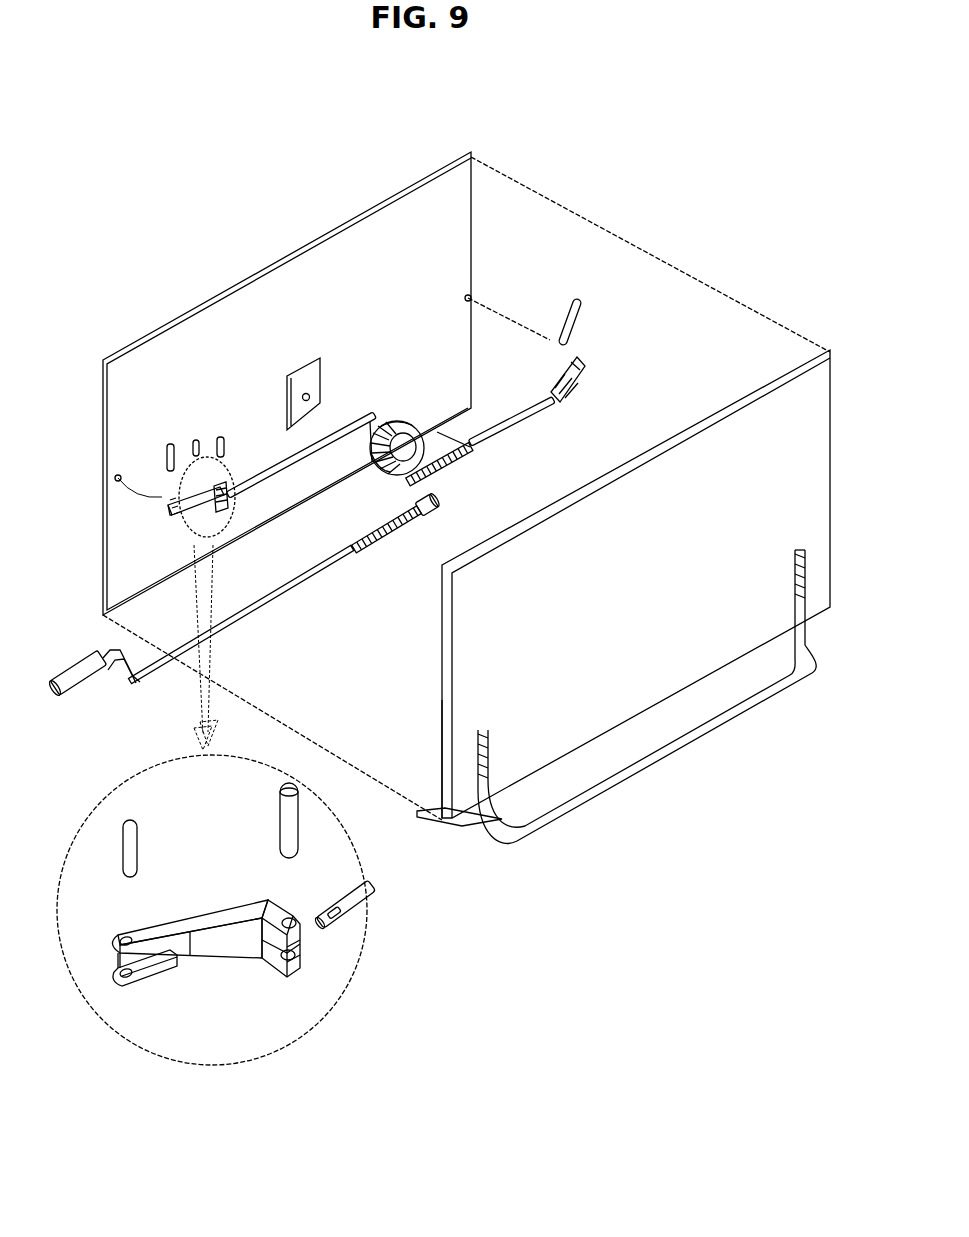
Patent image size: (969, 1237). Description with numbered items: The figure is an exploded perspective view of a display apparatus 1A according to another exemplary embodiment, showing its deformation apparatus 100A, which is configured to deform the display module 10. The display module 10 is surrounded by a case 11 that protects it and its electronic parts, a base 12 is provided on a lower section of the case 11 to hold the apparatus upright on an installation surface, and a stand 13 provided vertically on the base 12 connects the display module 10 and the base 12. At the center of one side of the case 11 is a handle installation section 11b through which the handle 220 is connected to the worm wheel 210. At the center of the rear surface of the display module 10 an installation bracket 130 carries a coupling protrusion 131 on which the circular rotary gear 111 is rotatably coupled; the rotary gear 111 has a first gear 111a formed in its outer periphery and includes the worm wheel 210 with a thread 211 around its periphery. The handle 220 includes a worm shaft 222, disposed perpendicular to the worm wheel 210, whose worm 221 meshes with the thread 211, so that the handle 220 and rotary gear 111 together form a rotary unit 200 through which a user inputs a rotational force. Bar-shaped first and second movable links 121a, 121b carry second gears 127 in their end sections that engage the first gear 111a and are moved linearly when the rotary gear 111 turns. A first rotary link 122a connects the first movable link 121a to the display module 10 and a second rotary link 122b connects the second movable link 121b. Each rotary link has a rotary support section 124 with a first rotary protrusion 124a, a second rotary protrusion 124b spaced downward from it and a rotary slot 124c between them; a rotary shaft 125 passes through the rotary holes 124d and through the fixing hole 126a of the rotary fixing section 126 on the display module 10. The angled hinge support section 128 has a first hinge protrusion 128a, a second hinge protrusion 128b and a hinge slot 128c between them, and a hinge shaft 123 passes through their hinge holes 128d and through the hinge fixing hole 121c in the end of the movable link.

The display apparatus 1A is at (617, 120).
The display module 10 is at (418, 182).
The case 11 is at (812, 404).
The handle installation section 11b is at (436, 722).
The base 12 is at (622, 797).
The stand 13 is at (806, 566).
The deformation apparatus 100A is at (517, 298).
The rotary gear 111 is at (418, 415).
The first gear 111a is at (477, 443).
The first movable link 121a is at (248, 485).
The second movable link 121b is at (512, 417).
The hinge fixing hole 121c is at (345, 922).
The first rotary link 122a is at (200, 452).
The second rotary link 122b is at (562, 358).
The hinge shaft 123 is at (222, 437).
The rotary support section 124 is at (172, 530).
The first rotary protrusion 124a is at (117, 939).
The second rotary protrusion 124b is at (138, 986).
The rotary slot 124c is at (155, 968).
The rotary holes 124d is at (140, 927).
The rotary shaft 125 is at (165, 452).
The rotary fixing section 126 is at (116, 481).
The fixing hole 126a is at (114, 476).
The second gears 127 is at (438, 445).
The hinge support section 128 is at (226, 515).
The first hinge protrusion 128a is at (290, 916).
The second hinge protrusion 128b is at (302, 962).
The hinge slot 128c is at (283, 962).
The hinge holes 128d is at (290, 966).
The installation bracket 130 is at (310, 376).
The coupling protrusion 131 is at (312, 396).
The rotary unit 200 is at (360, 455).
The worm wheel 210 is at (377, 470).
The thread 211 is at (406, 418).
The handle 220 is at (84, 676).
The worm 221 is at (380, 540).
The worm shaft 222 is at (237, 612).